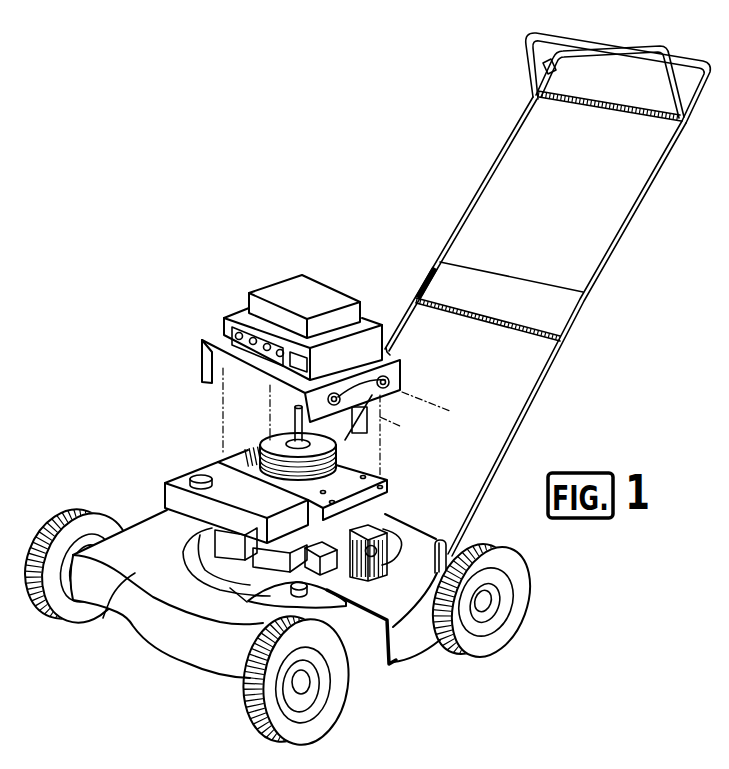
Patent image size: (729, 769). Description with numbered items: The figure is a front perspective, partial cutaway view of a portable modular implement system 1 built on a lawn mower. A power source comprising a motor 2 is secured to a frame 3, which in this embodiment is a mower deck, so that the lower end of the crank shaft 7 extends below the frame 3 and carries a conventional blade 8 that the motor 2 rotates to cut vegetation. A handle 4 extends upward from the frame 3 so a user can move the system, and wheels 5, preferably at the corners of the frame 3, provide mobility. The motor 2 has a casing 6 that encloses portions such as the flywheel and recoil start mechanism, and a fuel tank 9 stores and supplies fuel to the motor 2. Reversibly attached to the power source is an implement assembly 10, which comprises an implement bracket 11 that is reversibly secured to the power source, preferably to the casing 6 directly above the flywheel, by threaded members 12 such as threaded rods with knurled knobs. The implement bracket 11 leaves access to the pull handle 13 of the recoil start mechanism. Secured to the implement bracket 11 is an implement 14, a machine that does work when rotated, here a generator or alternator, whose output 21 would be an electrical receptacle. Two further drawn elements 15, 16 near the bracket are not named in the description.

The portable modular implement system 1 is at (222, 242).
The motor 2 is at (392, 527).
The frame 3 is at (105, 617).
The handle 4 is at (470, 199).
The wheels 5 is at (105, 517).
The casing 6 is at (355, 472).
The crank shaft 7 is at (258, 610).
The blade 8 is at (343, 617).
The fuel tank 9 is at (182, 483).
The implement assembly 10 is at (277, 282).
The implement bracket 11 is at (389, 352).
The threaded members 12 is at (401, 367).
The pull handle 13 is at (245, 446).
The implement 14 is at (238, 316).
The bolt 15 is at (305, 414).
The shaft 16 is at (333, 435).
The output 21 is at (226, 332).